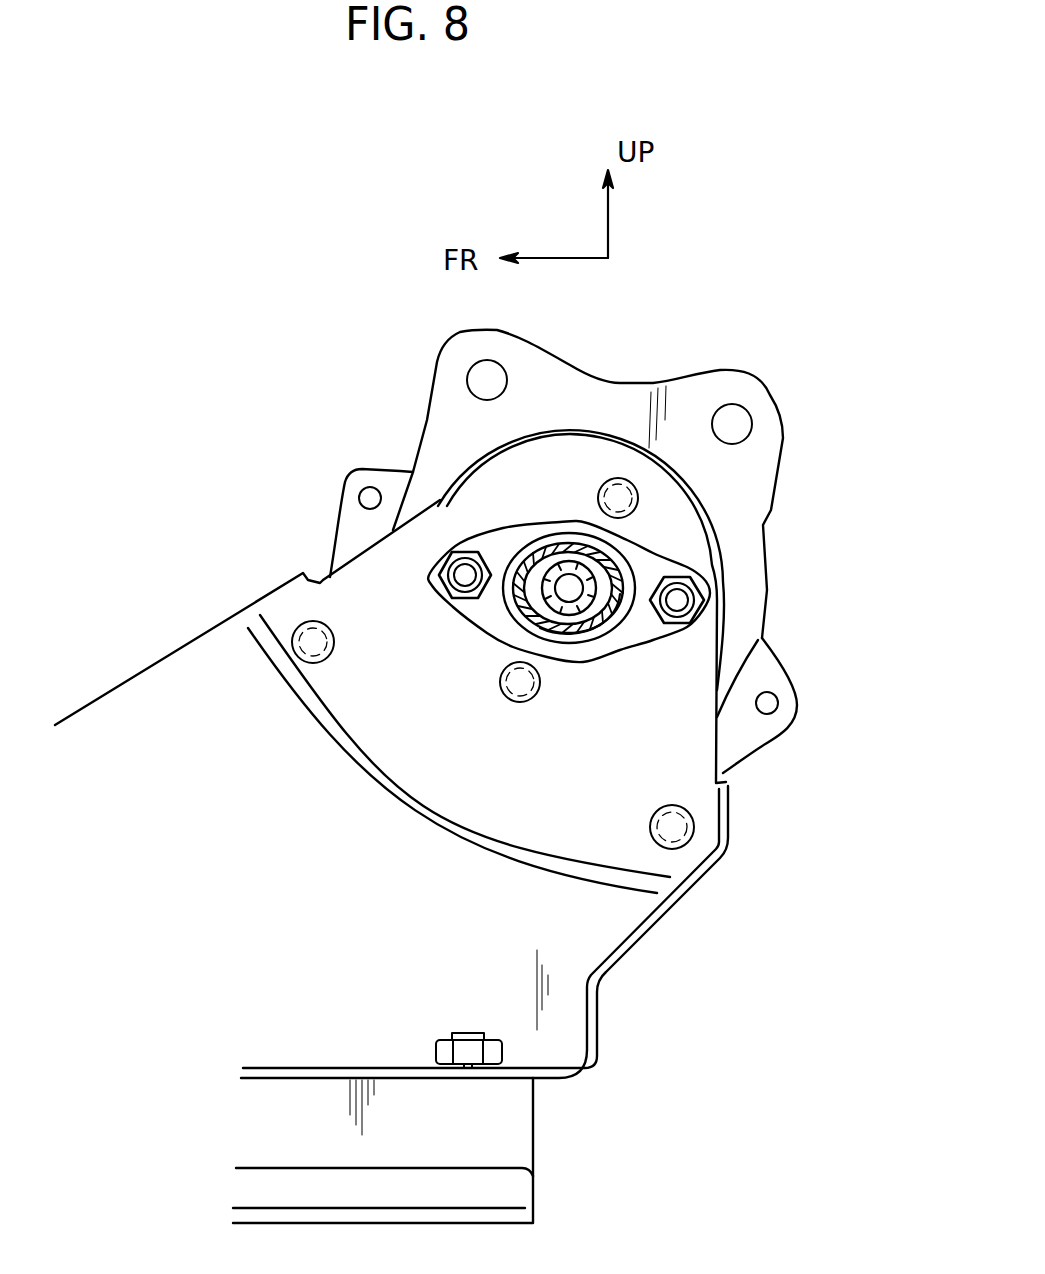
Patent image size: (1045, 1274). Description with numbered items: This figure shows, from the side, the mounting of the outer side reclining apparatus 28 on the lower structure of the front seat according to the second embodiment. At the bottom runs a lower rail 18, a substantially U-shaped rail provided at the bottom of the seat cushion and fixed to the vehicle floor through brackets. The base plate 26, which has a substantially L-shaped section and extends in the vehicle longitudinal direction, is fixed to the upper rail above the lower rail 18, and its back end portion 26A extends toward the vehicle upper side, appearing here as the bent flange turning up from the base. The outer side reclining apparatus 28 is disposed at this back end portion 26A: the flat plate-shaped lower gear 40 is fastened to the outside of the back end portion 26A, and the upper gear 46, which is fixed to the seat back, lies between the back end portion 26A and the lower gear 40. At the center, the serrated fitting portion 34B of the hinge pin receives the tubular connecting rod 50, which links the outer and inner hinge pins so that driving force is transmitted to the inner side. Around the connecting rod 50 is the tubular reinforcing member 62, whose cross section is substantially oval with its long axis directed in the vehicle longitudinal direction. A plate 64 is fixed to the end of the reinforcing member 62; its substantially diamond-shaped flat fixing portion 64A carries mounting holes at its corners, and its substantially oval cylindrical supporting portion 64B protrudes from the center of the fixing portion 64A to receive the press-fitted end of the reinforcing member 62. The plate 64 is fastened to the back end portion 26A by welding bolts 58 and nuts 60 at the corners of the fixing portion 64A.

The lower rail 18 is at (520, 1137).
The base plate 26 is at (151, 664).
The back end portion 26A is at (703, 750).
The outer side reclining apparatus 28 is at (288, 413).
The fitting portion 34B is at (587, 578).
The lower gear 40 is at (753, 730).
The upper gear 46 is at (630, 392).
The connecting rod 50 is at (557, 567).
The welding bolt 58 is at (445, 597).
The nut 60 is at (440, 576).
The reinforcing member 62 is at (505, 610).
The plate 64 is at (505, 643).
The fixing portion 64A is at (647, 635).
The supporting portion 64B is at (587, 645).